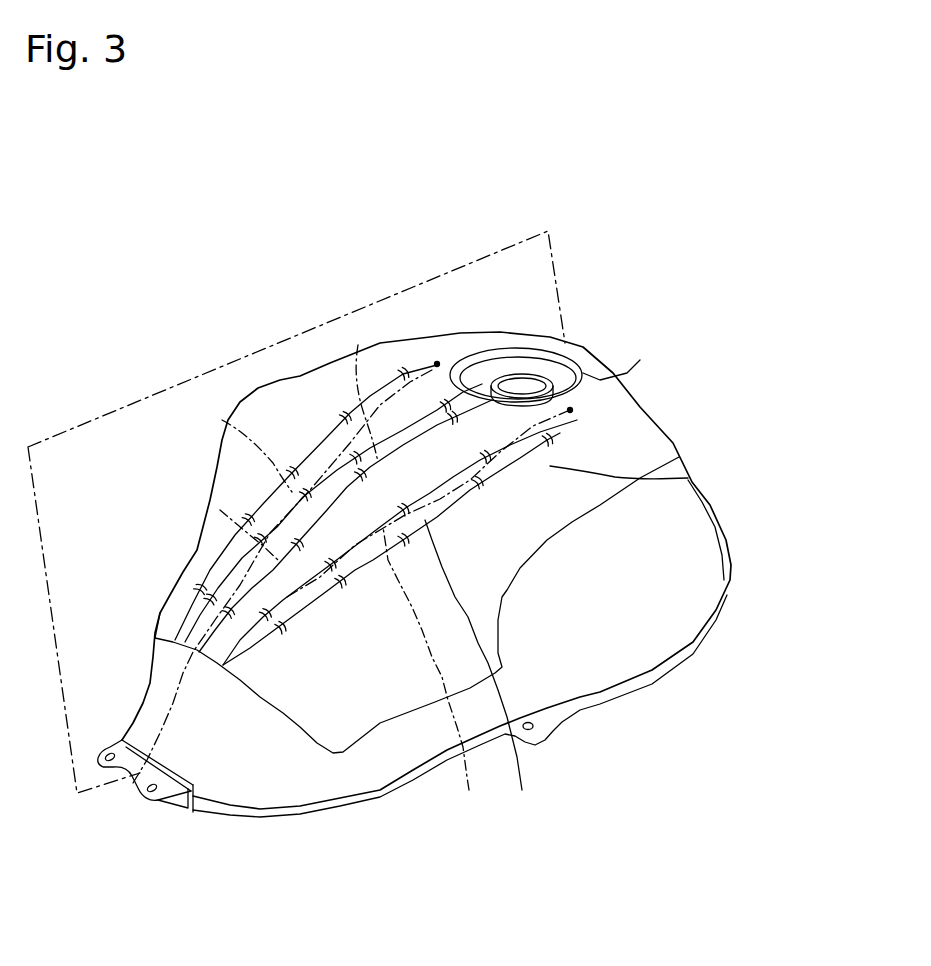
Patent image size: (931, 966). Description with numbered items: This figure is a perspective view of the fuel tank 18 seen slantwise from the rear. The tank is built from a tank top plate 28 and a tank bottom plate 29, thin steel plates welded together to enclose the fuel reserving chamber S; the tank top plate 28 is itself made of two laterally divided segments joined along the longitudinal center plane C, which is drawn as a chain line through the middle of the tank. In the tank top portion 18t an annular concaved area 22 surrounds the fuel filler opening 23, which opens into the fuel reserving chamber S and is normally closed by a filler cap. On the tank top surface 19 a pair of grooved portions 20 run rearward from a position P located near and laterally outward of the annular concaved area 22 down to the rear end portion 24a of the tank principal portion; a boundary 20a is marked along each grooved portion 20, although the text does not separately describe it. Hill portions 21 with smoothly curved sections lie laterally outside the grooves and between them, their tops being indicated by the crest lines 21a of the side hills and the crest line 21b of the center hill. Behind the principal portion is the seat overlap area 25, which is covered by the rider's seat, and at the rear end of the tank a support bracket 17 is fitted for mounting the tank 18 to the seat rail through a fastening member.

The support bracket 17 is at (140, 778).
The fuel tank 18 is at (674, 443).
The tank top portion 18t is at (590, 392).
The tank top surface 19 is at (690, 477).
The grooved portion 20 is at (240, 560).
The parting line of weld bead 20a is at (220, 510).
The hill portion 21 is at (267, 494).
The crest line 21a is at (222, 420).
The crest line 21b is at (371, 390).
The annular concaved area 22 is at (527, 360).
The fuel filler opening 23 is at (507, 383).
The rear end portion of the tank principal portion 24a is at (248, 690).
The seat overlap area 25 is at (153, 710).
The tank top plate 28 is at (357, 715).
The tank bottom plate 29 is at (340, 763).
The longitudinal center plane C is at (397, 292).
The position P is at (437, 364).
The fuel reserving chamber S is at (547, 390).